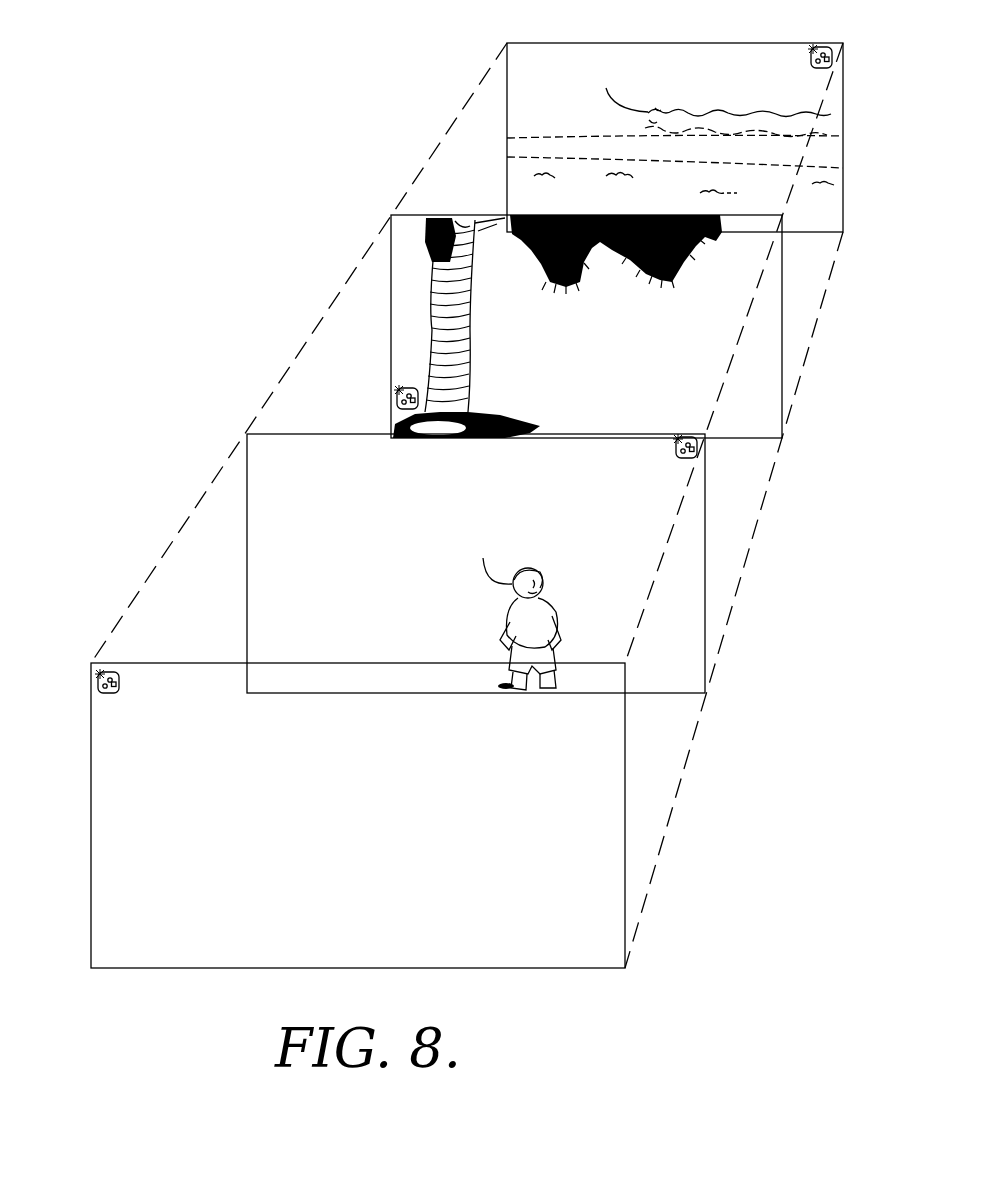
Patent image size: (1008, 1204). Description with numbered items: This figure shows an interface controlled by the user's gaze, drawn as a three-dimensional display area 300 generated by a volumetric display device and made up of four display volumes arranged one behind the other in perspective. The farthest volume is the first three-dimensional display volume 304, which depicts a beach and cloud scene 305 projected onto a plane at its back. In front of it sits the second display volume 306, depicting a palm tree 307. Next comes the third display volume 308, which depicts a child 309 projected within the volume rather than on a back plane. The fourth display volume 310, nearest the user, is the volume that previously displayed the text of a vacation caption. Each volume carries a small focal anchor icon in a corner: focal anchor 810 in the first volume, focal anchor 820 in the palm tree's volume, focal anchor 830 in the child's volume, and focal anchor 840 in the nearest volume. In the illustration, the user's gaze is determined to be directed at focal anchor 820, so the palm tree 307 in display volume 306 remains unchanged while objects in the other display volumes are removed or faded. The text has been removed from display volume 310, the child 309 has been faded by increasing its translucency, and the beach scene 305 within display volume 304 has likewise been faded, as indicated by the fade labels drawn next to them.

The three-dimensional display area 300 is at (260, 142).
The first three-dimensional display volume 304 is at (873, 117).
The beach and cloud scene 305 is at (688, 110).
The second display volume 306 is at (782, 272).
The palm tree 307 is at (472, 322).
The third display volume 308 is at (705, 523).
The child 309 is at (558, 638).
The fourth display volume 310 is at (656, 755).
The focal anchor 810 is at (816, 47).
The focal anchor 820 is at (396, 396).
The focal anchor 830 is at (676, 450).
The focal anchor 840 is at (98, 680).